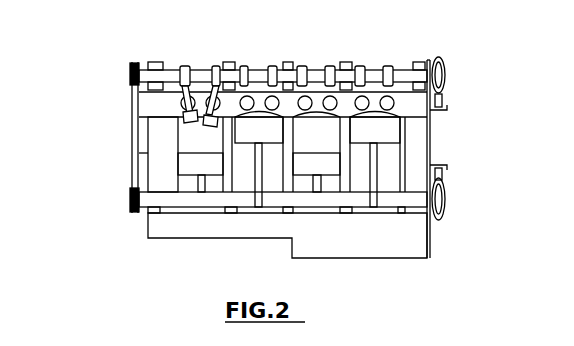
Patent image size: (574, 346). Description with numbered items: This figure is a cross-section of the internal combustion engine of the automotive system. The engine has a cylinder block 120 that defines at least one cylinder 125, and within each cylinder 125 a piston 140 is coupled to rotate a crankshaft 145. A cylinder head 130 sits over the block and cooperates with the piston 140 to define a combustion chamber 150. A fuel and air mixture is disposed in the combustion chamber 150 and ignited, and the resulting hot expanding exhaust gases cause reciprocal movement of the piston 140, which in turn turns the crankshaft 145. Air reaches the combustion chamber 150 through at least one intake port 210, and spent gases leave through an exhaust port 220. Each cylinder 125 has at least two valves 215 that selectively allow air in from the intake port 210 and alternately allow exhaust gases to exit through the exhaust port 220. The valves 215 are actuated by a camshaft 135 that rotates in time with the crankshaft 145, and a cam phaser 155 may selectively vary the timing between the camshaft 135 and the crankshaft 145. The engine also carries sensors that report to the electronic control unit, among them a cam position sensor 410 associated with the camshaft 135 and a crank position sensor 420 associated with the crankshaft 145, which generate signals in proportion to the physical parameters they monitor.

The cylinder block 120 is at (148, 153).
The cylinder 125 is at (293, 143).
The cylinder head 130 is at (148, 112).
The camshaft 135 is at (197, 66).
The piston 140 is at (318, 162).
The crankshaft 145 is at (173, 202).
The combustion chamber 150 is at (376, 117).
The cam phaser 155 is at (131, 68).
The intake port 210 is at (308, 102).
The valves 215 is at (187, 118).
The exhaust port 220 is at (267, 97).
The cam position sensor 410 is at (443, 108).
The crank position sensor 420 is at (443, 170).